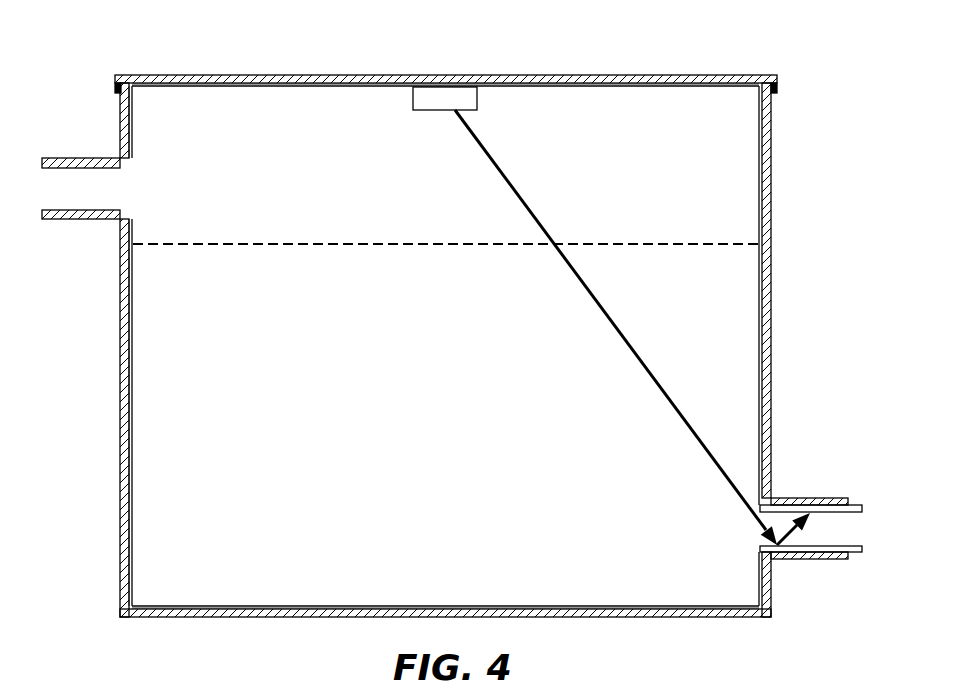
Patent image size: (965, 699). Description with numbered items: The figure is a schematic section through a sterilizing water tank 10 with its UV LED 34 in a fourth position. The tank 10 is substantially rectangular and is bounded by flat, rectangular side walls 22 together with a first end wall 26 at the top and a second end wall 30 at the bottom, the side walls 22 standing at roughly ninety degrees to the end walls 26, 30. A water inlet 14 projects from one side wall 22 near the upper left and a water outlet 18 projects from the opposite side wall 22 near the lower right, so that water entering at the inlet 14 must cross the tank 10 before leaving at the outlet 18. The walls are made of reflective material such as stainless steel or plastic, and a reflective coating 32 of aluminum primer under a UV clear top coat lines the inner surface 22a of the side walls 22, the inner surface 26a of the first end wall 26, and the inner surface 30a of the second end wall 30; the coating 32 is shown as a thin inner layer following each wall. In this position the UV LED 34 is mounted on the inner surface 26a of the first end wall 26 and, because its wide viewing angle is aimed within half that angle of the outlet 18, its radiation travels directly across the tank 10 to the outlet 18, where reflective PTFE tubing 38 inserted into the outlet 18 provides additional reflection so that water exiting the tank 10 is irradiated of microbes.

The water tank 10 is at (713, 50).
The water inlet 14 is at (78, 157).
The water outlet 18 is at (815, 500).
The side walls 22 is at (788, 182).
The inner surface of the side walls 22a is at (128, 358).
The first end wall 26 is at (237, 75).
The inner surface of the first end wall 26a is at (272, 87).
The second end wall 30 is at (272, 620).
The inner surface of the second end wall 30a is at (585, 594).
The reflective coating 32 is at (628, 88).
The UV LED 34 is at (445, 95).
The reflective tubing 38 is at (843, 537).